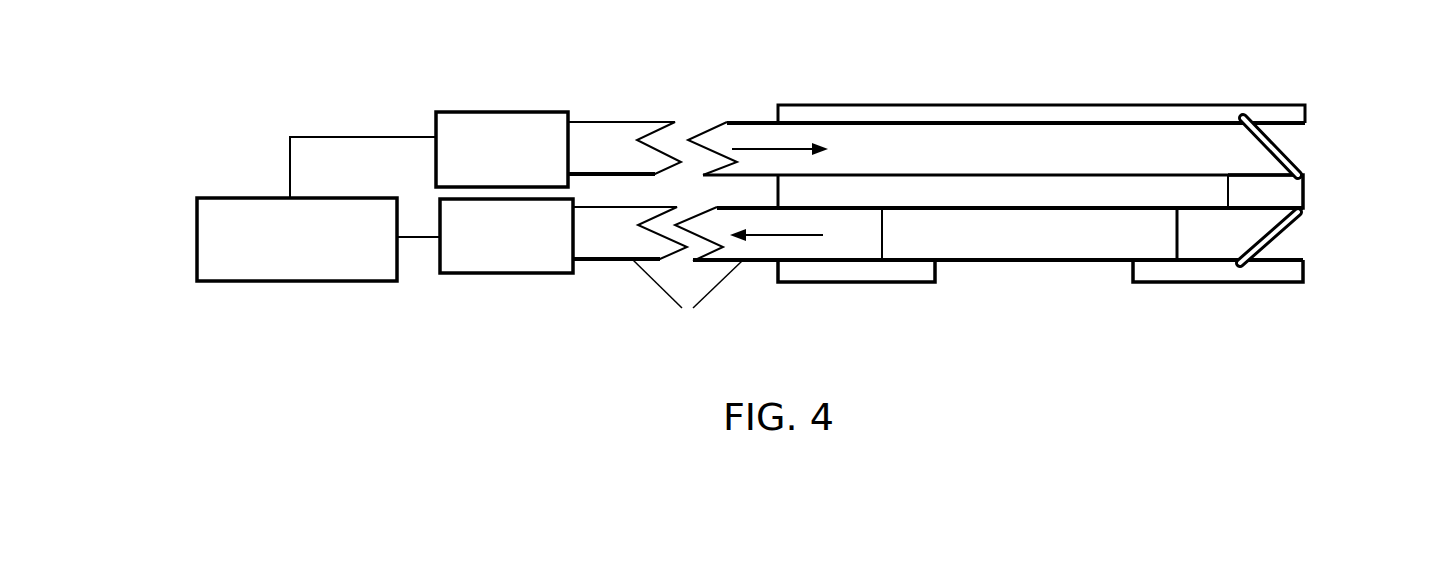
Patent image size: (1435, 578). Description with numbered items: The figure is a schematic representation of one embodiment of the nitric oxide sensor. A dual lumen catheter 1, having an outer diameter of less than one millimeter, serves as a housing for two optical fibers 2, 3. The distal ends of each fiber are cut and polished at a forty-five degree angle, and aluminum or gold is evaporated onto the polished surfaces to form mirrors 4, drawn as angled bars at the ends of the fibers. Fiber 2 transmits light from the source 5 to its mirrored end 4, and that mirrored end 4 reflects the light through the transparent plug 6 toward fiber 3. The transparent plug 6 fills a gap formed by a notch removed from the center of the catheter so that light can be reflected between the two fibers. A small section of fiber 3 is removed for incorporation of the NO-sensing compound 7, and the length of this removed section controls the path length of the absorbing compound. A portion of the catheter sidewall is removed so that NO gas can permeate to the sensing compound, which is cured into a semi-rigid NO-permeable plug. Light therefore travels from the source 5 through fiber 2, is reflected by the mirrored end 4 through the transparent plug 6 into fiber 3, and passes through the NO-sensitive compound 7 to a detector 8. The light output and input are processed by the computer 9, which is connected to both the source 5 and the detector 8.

The dual lumen catheter 1 is at (1041, 67).
The fiber 2 is at (996, 148).
The fiber 3 is at (989, 234).
The mirrors 4 is at (1321, 204).
The source 5 is at (502, 149).
The transparent plug 6 is at (1267, 188).
The NO-sensing compound 7 is at (1040, 305).
The detector 8 is at (506, 236).
The computer 9 is at (297, 239).